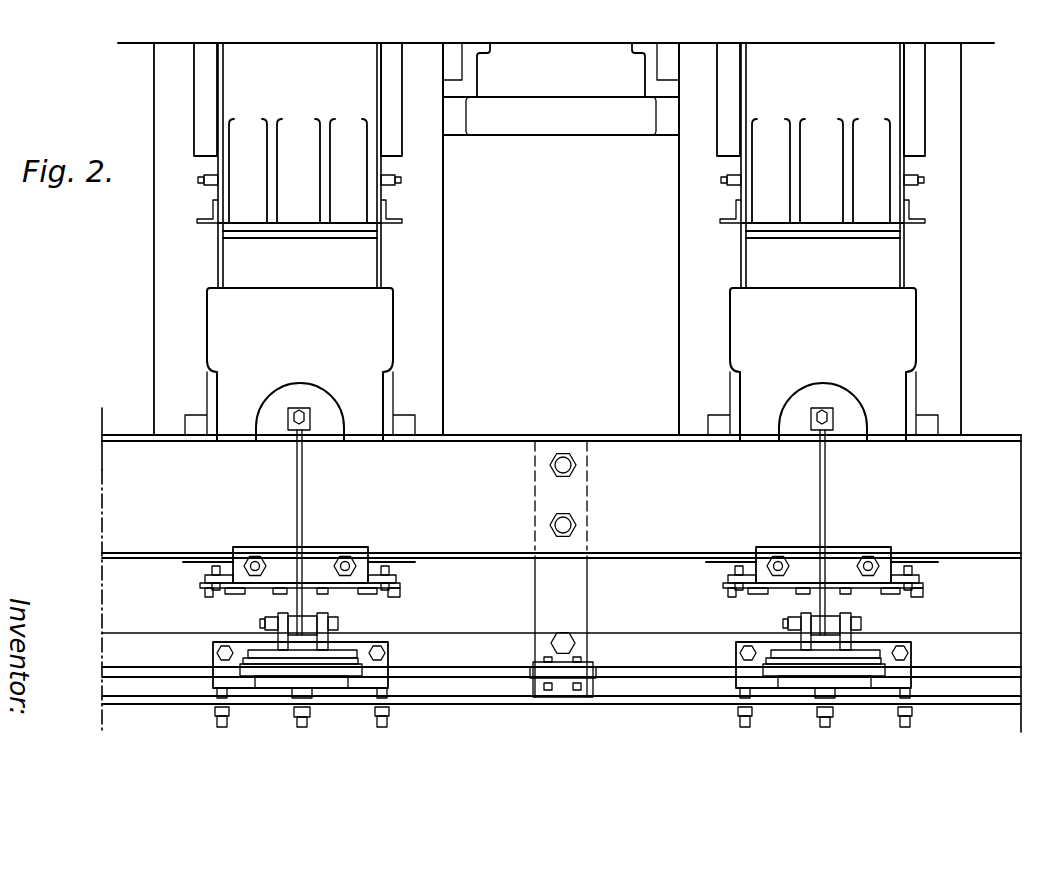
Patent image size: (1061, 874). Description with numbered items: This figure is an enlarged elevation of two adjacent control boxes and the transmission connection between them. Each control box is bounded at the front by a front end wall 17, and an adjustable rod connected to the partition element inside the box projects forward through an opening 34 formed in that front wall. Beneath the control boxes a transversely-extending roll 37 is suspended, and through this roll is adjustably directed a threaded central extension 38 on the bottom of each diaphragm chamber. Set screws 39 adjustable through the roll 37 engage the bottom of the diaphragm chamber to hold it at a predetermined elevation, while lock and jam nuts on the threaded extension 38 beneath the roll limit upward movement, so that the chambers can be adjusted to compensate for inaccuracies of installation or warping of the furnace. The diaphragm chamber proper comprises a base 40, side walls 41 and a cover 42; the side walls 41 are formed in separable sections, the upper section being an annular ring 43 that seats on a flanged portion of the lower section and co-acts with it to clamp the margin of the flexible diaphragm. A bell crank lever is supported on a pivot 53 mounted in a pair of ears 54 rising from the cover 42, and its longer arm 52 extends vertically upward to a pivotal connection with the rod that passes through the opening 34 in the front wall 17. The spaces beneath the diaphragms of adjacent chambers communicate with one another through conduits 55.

The front end wall 17 is at (559, 165).
The opening 34 is at (308, 411).
The roll 37 is at (567, 705).
The threaded central extension 38 is at (299, 728).
The set screws 39 is at (226, 728).
The base 40 is at (337, 689).
The side walls 41 is at (365, 671).
The cover 42 is at (340, 651).
The annular ring 43 is at (360, 659).
The longer arm 52 is at (303, 511).
The pivot 53 is at (262, 623).
The ears 54 is at (280, 614).
The conduits 55 is at (165, 678).